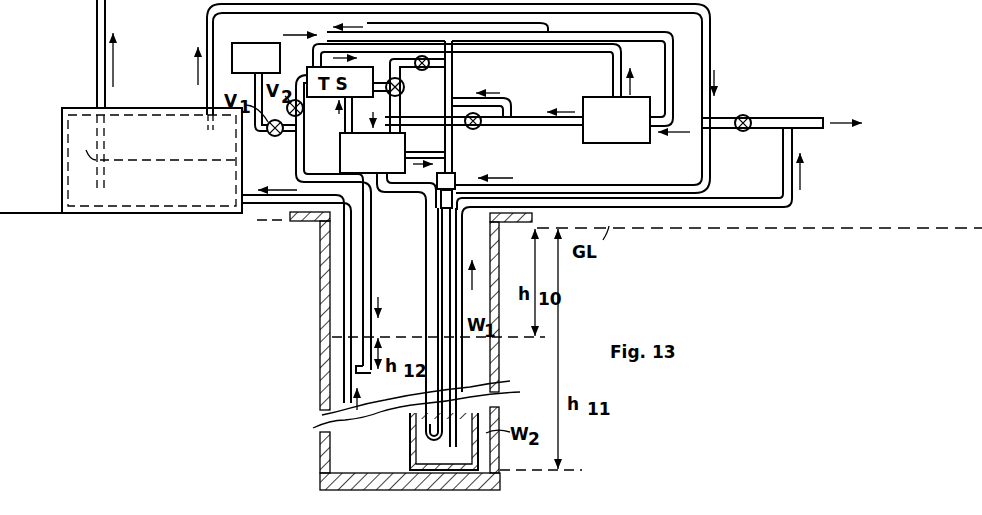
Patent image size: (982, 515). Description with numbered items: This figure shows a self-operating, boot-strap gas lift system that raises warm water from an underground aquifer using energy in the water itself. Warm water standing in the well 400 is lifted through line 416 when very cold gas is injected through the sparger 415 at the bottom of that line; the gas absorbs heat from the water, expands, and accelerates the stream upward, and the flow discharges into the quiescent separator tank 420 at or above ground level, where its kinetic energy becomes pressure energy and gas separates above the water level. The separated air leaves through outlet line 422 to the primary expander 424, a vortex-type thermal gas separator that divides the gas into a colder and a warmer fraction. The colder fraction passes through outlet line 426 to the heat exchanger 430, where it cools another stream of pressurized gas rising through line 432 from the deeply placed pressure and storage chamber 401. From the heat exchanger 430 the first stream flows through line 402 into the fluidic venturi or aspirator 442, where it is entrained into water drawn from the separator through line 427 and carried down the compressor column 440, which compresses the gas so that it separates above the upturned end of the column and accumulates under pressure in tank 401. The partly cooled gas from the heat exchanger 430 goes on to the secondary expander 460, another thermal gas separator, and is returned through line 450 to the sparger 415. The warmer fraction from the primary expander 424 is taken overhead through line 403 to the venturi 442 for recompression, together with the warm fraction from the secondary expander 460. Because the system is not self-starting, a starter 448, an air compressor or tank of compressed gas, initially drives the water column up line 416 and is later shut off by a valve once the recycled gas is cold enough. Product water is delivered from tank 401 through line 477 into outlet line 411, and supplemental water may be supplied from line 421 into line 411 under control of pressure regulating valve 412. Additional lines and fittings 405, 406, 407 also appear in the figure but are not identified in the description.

The well 400 is at (327, 259).
The pressure and storage chamber 401 is at (410, 429).
The line 402 is at (430, 152).
The line 403 is at (614, 40).
The pipe 405 is at (522, 92).
The valve 406 is at (473, 131).
The pipe 407 is at (484, 150).
The outlet line 411 is at (716, 120).
The pressure regulating valve 412 is at (751, 114).
The sparger 415 is at (356, 378).
The line 416 is at (344, 297).
The separator tank 420 is at (152, 213).
The line 421 is at (97, 42).
The outlet line 422 is at (207, 88).
The primary expander 424 is at (632, 144).
The outlet line 426 is at (535, 126).
The line 427 is at (448, 86).
The heat exchanger 430 is at (340, 147).
The line 432 is at (296, 165).
The compressor column 440 is at (445, 303).
The fluidic venturi or aspirator 442 is at (455, 180).
The starter 448 is at (232, 48).
The line 450 is at (372, 196).
The secondary expander 460 is at (409, 94).
The line 477 is at (440, 250).